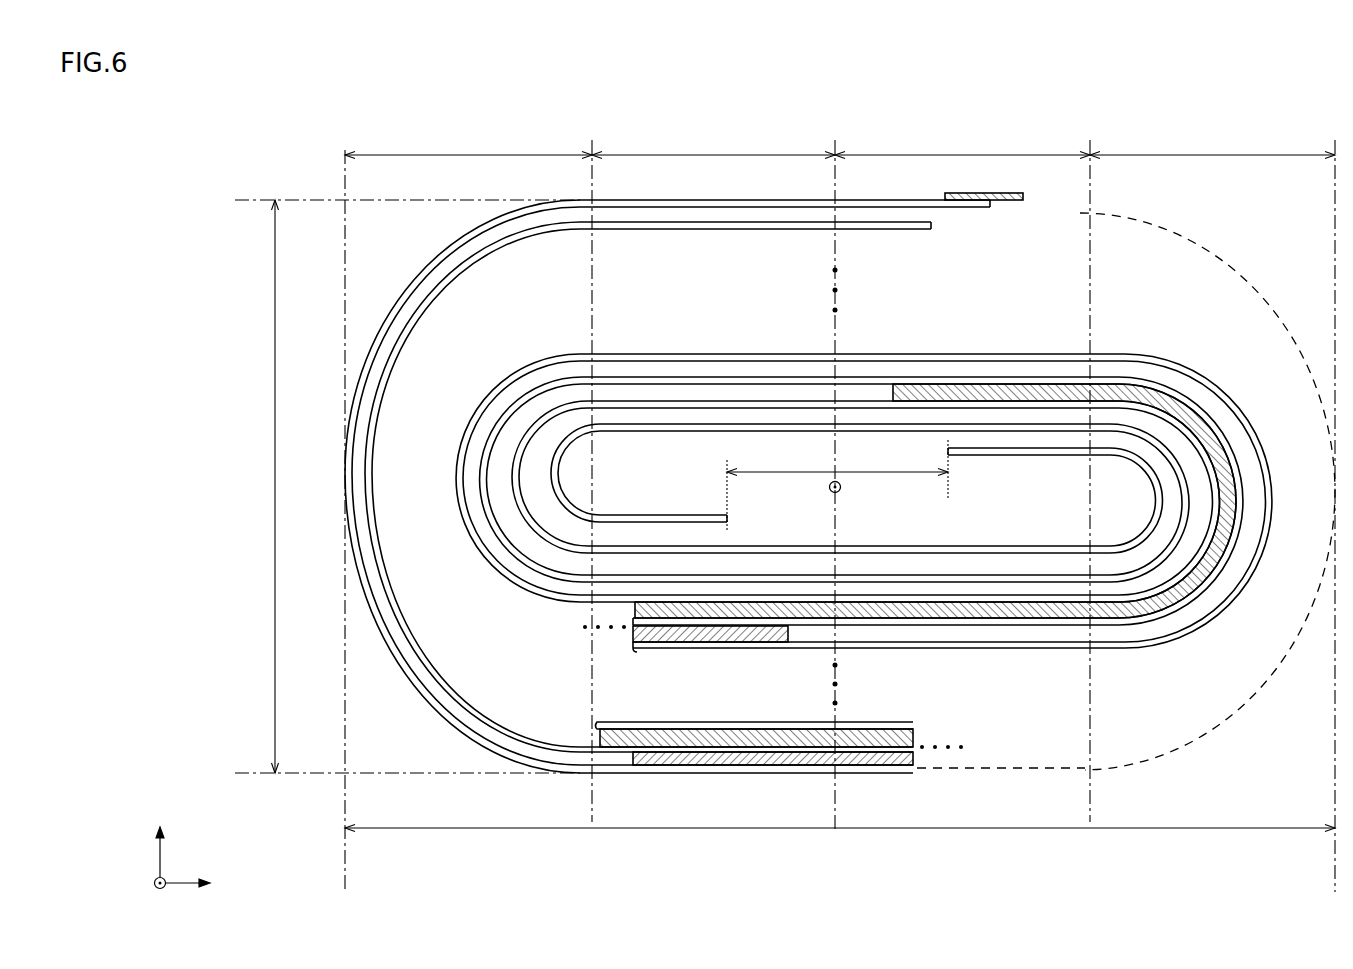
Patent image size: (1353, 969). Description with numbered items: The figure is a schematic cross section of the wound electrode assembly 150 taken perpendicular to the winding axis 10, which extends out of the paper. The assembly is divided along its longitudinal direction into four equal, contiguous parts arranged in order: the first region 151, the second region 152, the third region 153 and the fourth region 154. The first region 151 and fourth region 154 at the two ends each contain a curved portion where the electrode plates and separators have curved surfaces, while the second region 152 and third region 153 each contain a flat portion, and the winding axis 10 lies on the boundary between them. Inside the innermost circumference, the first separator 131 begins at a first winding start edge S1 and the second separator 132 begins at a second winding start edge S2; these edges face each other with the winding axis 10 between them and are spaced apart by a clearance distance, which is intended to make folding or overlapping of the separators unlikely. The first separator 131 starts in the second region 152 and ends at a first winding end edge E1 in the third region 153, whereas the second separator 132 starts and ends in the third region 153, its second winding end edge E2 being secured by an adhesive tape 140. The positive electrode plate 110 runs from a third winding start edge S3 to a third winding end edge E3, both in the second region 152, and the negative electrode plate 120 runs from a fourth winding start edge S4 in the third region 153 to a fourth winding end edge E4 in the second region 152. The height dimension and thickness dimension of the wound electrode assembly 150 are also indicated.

The winding axis 10 is at (840, 491).
The positive electrode plate 110 is at (713, 645).
The negative electrode plate 120 is at (987, 392).
The first separator 131 is at (730, 231).
The second separator 132 is at (784, 200).
The adhesive tape 140 is at (1006, 196).
The wound electrode assembly 150 is at (304, 138).
The first region 151 is at (468, 145).
The second region 152 is at (713, 145).
The third region 153 is at (962, 145).
The fourth region 154 is at (1212, 145).
The first winding start edge S1 is at (728, 518).
The second winding start edge S2 is at (946, 451).
The third winding start edge S3 is at (790, 645).
The fourth winding start edge S4 is at (893, 388).
The first winding end edge E1 is at (932, 226).
The second winding end edge E2 is at (991, 207).
The third winding end edge E3 is at (633, 758).
The fourth winding end edge E4 is at (600, 731).